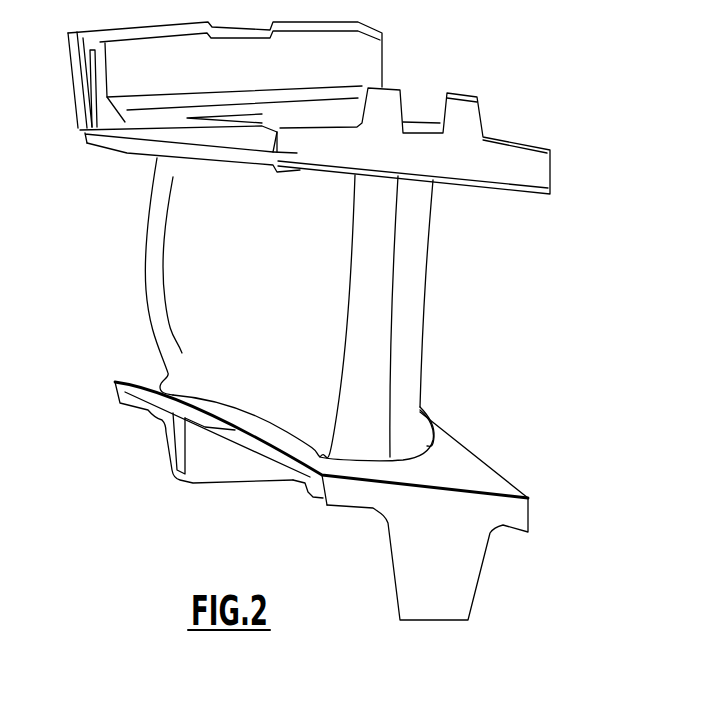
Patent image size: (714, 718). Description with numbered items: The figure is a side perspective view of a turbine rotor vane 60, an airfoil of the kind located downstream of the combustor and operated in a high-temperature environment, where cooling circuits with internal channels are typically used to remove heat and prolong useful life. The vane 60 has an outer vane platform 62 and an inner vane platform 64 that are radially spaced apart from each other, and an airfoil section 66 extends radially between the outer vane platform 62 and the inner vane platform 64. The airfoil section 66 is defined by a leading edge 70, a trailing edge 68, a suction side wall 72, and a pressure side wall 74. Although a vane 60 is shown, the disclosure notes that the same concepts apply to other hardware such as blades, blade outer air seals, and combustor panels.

The turbine rotor vane 60 is at (347, 321).
The outer vane platform 62 is at (480, 163).
The inner vane platform 64 is at (477, 477).
The airfoil section 66 is at (435, 333).
The trailing edge 68 is at (145, 257).
The leading edge 70 is at (387, 383).
The suction side wall 72 is at (423, 297).
The pressure side wall 74 is at (273, 348).